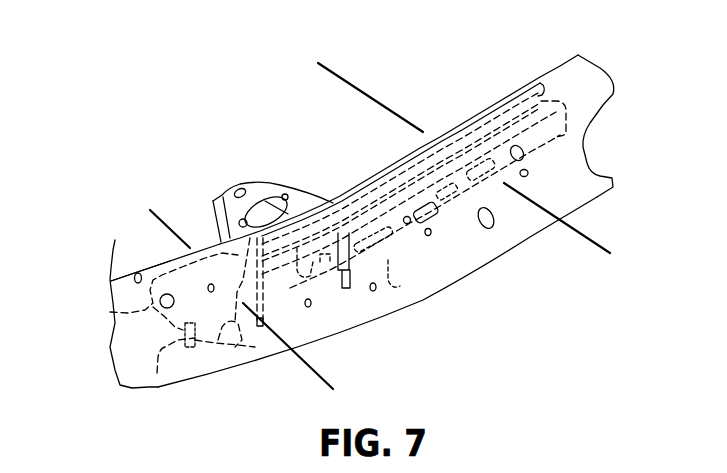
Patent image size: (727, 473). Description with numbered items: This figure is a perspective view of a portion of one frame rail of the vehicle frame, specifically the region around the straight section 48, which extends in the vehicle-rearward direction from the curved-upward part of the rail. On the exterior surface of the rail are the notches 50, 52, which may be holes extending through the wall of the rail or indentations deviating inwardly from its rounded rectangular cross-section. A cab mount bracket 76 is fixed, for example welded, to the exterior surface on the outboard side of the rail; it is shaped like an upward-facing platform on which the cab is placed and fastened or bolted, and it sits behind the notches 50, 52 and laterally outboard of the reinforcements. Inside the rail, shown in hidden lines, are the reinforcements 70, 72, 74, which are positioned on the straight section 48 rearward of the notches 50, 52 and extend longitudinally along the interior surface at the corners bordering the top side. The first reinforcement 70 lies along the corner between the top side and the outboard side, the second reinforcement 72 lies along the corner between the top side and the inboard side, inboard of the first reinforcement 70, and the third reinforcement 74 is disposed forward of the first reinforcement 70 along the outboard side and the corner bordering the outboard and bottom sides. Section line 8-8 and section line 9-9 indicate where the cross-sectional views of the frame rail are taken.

The straight section 48 is at (480, 267).
The notch 50 is at (115, 240).
The notch 52 is at (157, 373).
The first reinforcement 70 is at (370, 183).
The second reinforcement 72 is at (387, 250).
The third reinforcement 74 is at (110, 312).
The cab mount bracket 76 is at (263, 182).
The line 8- 8 is at (318, 76).
The line 9- 9 is at (143, 222).